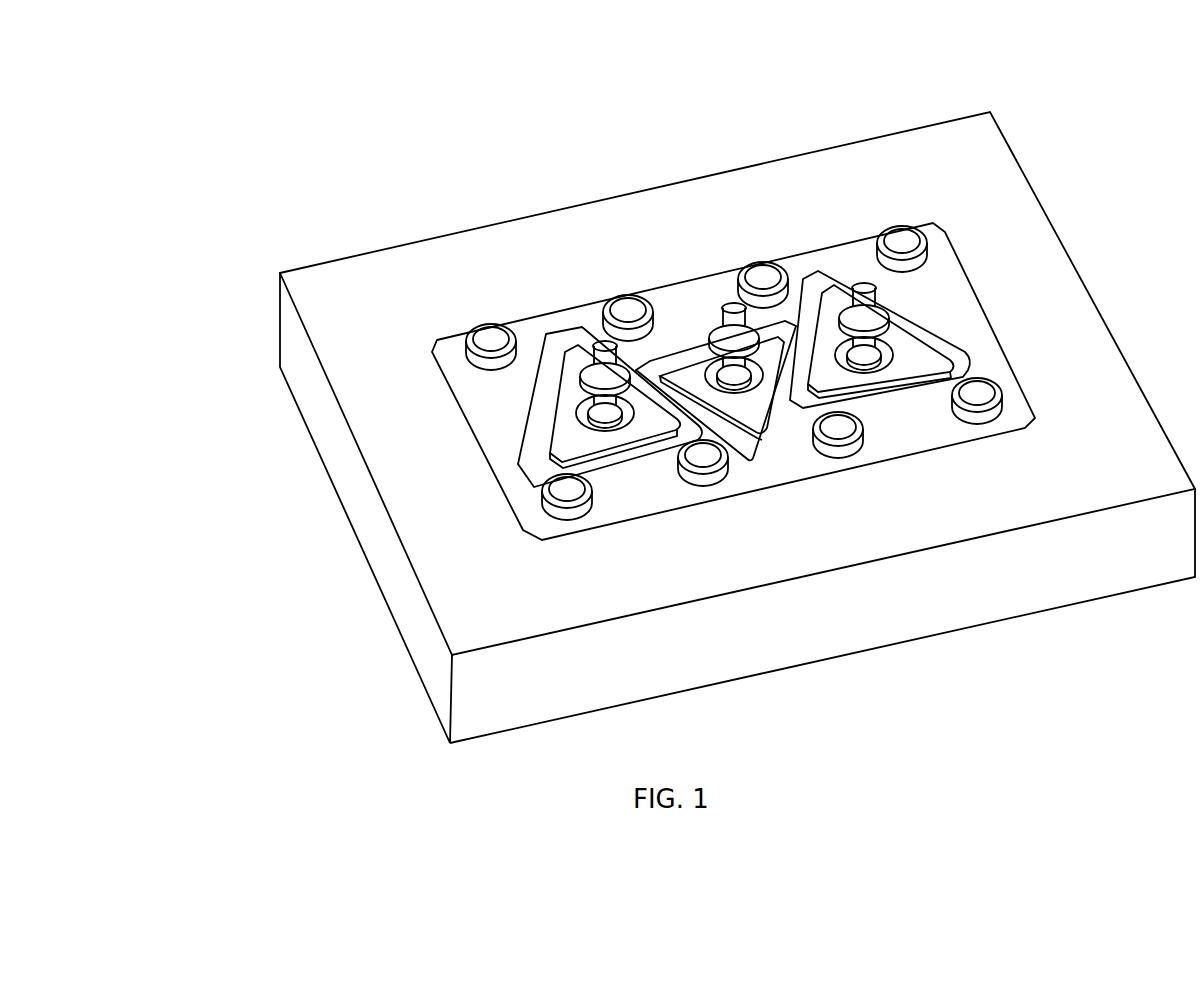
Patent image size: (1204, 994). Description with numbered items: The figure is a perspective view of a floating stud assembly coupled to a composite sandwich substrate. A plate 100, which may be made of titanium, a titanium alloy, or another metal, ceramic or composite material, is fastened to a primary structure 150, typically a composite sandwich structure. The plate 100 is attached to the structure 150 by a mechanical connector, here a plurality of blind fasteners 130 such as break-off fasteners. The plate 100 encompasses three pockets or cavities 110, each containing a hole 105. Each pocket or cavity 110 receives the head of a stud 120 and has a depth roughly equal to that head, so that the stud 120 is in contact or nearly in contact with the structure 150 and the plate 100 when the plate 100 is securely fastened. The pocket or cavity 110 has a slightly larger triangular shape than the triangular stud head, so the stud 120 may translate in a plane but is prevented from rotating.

The plate 100 is at (231, 410).
The hole 105 is at (883, 360).
The pocket or cavity 110 is at (762, 447).
The stud 120 is at (852, 282).
The blind fasteners 130 is at (903, 244).
The primary structure 150 is at (470, 575).